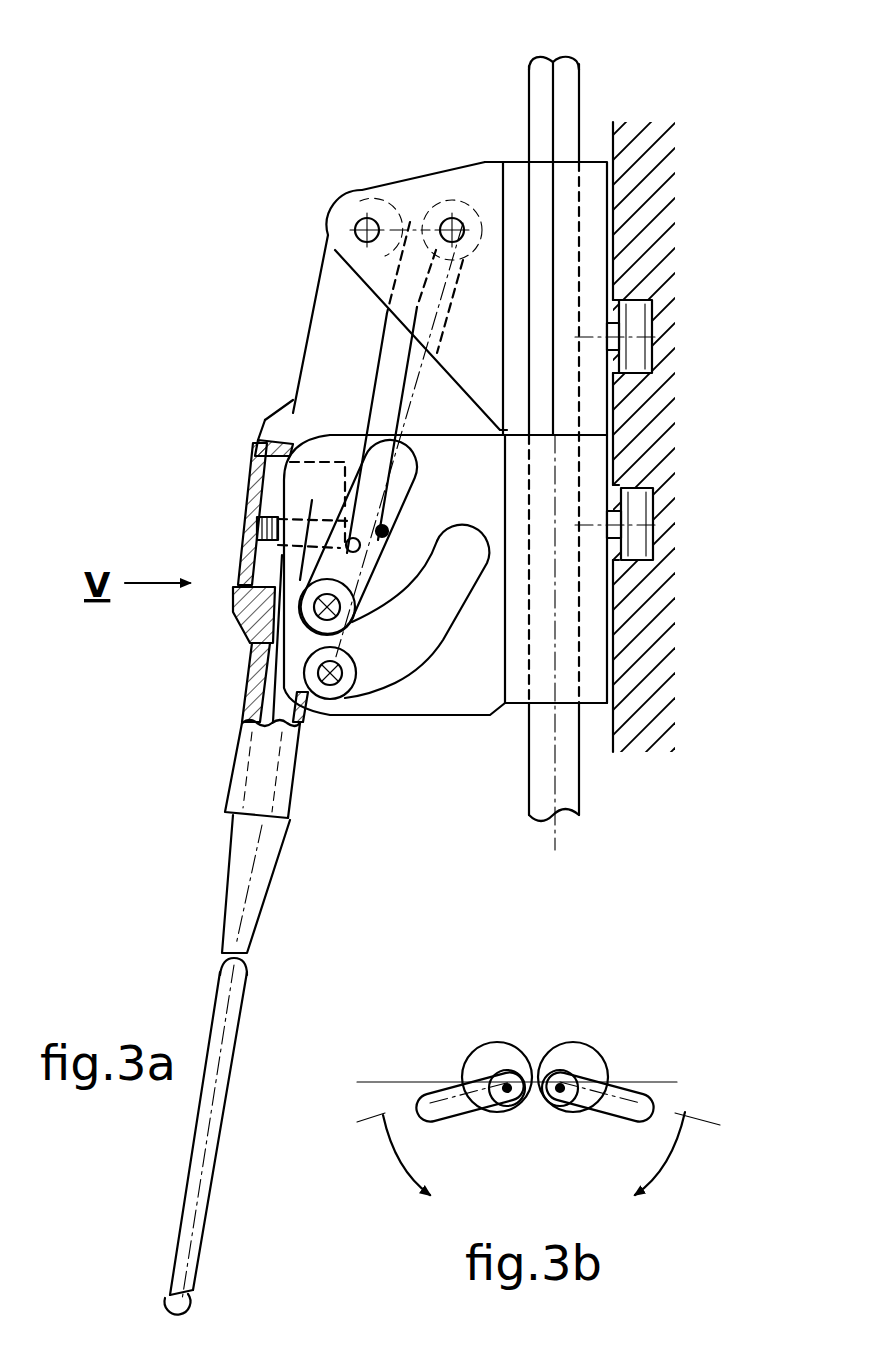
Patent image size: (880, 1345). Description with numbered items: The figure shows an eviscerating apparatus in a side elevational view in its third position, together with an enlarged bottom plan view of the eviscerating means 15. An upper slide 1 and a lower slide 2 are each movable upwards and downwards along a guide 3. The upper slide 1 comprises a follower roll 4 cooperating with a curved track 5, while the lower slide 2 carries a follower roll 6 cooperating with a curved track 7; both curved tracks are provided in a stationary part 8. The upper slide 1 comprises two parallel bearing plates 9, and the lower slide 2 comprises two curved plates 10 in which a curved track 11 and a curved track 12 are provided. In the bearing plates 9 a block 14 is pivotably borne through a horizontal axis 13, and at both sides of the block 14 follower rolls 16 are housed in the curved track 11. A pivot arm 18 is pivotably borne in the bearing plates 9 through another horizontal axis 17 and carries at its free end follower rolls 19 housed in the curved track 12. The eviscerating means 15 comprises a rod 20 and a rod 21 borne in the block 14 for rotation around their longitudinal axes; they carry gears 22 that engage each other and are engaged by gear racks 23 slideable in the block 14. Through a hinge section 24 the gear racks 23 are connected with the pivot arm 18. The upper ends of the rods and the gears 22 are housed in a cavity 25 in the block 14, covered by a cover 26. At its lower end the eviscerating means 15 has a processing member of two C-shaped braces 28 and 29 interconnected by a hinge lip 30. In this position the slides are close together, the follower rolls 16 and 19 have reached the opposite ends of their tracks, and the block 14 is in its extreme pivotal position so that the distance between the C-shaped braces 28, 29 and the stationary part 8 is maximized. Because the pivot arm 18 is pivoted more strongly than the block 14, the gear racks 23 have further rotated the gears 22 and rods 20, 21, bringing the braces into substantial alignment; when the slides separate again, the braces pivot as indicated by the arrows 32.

In FIG. 3A, the upper slide 1 is at (599, 250).
In FIG. 3A, the lower slide 2 is at (600, 660).
In FIG. 3A, the guide 3 is at (567, 88).
In FIG. 3A, the follower roll 4 is at (637, 353).
In FIG. 3A, the curved track 5 is at (652, 300).
In FIG. 3A, the follower roll 6 is at (650, 500).
In FIG. 3A, the curved track 7 is at (650, 563).
In FIG. 3A, the stationary part 8 is at (655, 205).
In FIG. 3A, the bearing plates 9 is at (398, 195).
In FIG. 3A, the curved plates 10 is at (443, 697).
In FIG. 3A, the curved track 11 is at (250, 640).
In FIG. 3A, the curved track 12 is at (270, 686).
In FIG. 3A, the horizontal axis 13 is at (382, 220).
In FIG. 3A, the block 14 is at (340, 310).
In FIG. 3A, the eviscerating means 15 is at (214, 956).
In FIG. 3A, the follower rolls 16 is at (345, 615).
In FIG. 3A, the horizontal axis 17 is at (455, 222).
In FIG. 3A, the pivot arm 18 is at (420, 404).
In FIG. 3A, the follower rolls 19 is at (347, 687).
In FIG. 3A, the rod 20 is at (262, 708).
In FIG. 3B, the rod 20 is at (590, 1060).
In FIG. 3B, the rod 21 is at (475, 1060).
In FIG. 3A, the gears 22 is at (255, 545).
In FIG. 3A, the gear racks 23 is at (258, 520).
In FIG. 3A, the hinge section 24 is at (393, 530).
In FIG. 3A, the cavity 25 is at (270, 460).
In FIG. 3A, the cover 26 is at (283, 430).
In FIG. 3A, the C-shaped brace 28 is at (232, 1023).
In FIG. 3B, the C-shaped brace 28 is at (645, 1092).
In FIG. 3B, the C-shaped brace 29 is at (425, 1098).
In FIG. 3A, the hinge lip 30 is at (165, 1295).
In FIG. 3B, the hinge lip 30 is at (532, 1075).
In FIG. 3B, the arrows 32 is at (405, 1160).